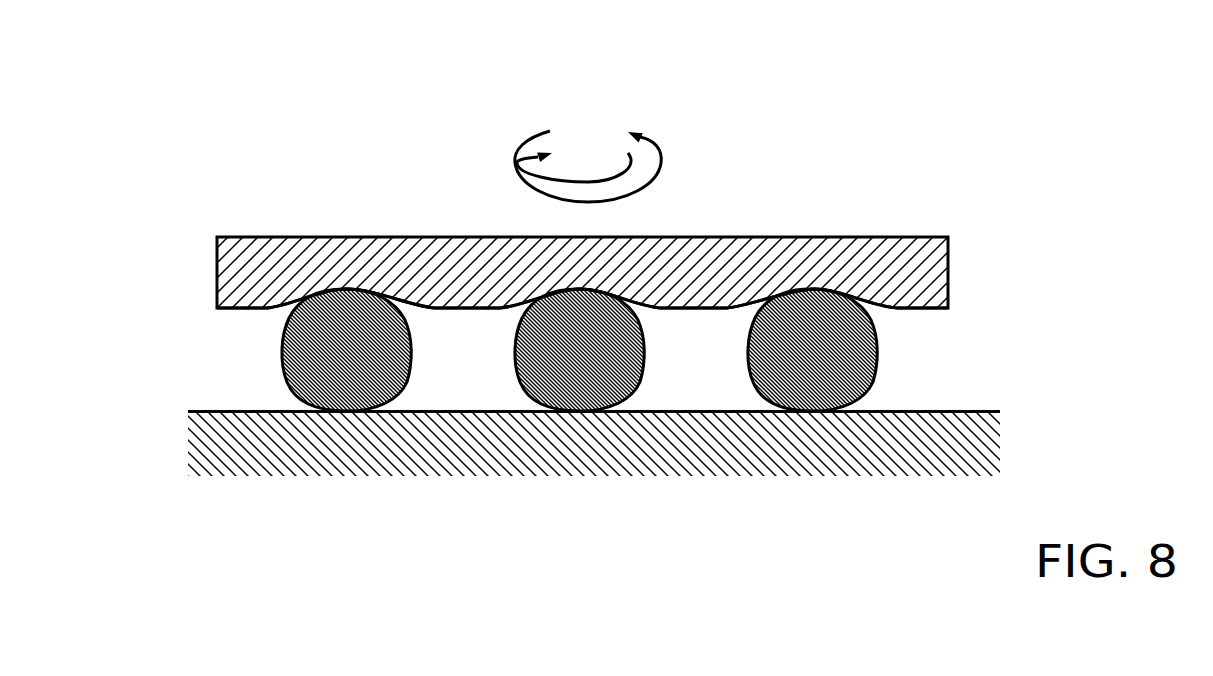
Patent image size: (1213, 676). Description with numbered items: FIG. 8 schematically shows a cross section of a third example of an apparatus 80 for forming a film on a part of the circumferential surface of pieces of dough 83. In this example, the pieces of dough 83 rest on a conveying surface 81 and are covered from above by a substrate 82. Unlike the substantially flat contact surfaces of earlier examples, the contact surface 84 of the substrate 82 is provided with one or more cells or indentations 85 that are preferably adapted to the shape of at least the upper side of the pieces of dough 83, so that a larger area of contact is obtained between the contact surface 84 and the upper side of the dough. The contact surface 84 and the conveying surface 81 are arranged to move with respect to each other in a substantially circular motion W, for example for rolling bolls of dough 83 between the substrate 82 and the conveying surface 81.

The polishing assembly 80 is at (205, 113).
The conveying surface 81 is at (968, 411).
The substrate 82 is at (236, 276).
The pieces of dough 83 is at (808, 383).
The contact surface 84 is at (223, 320).
The cells or indentations 85 is at (511, 316).